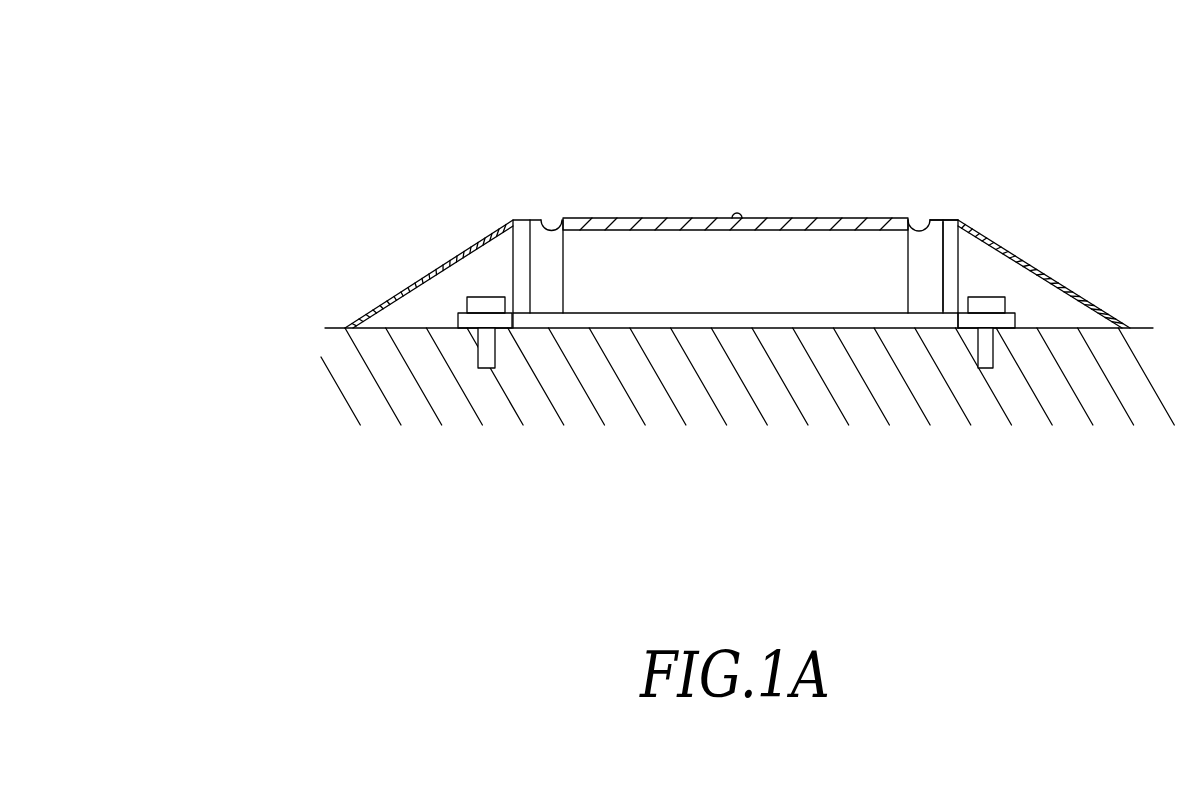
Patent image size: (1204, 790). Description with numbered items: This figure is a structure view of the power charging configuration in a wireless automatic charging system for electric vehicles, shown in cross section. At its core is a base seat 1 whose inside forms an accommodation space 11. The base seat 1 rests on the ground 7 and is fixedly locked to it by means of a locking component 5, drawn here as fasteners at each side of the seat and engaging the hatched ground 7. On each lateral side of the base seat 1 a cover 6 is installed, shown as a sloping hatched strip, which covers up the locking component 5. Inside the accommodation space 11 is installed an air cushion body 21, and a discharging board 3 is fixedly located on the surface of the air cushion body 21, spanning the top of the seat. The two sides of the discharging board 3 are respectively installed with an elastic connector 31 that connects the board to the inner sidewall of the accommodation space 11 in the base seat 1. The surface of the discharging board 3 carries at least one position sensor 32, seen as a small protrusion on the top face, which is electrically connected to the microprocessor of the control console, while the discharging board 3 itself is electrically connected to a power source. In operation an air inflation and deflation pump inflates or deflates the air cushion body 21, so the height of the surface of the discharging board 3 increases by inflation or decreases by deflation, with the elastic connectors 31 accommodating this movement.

The base seat 1 is at (948, 263).
The accommodation space 11 is at (927, 253).
The air cushion body 21 is at (668, 284).
The discharging board 3 is at (673, 225).
The elastic connector 31 is at (553, 227).
The position sensor 32 is at (737, 215).
The locking component 5 is at (998, 305).
The cover 6 is at (410, 282).
The ground 7 is at (345, 373).